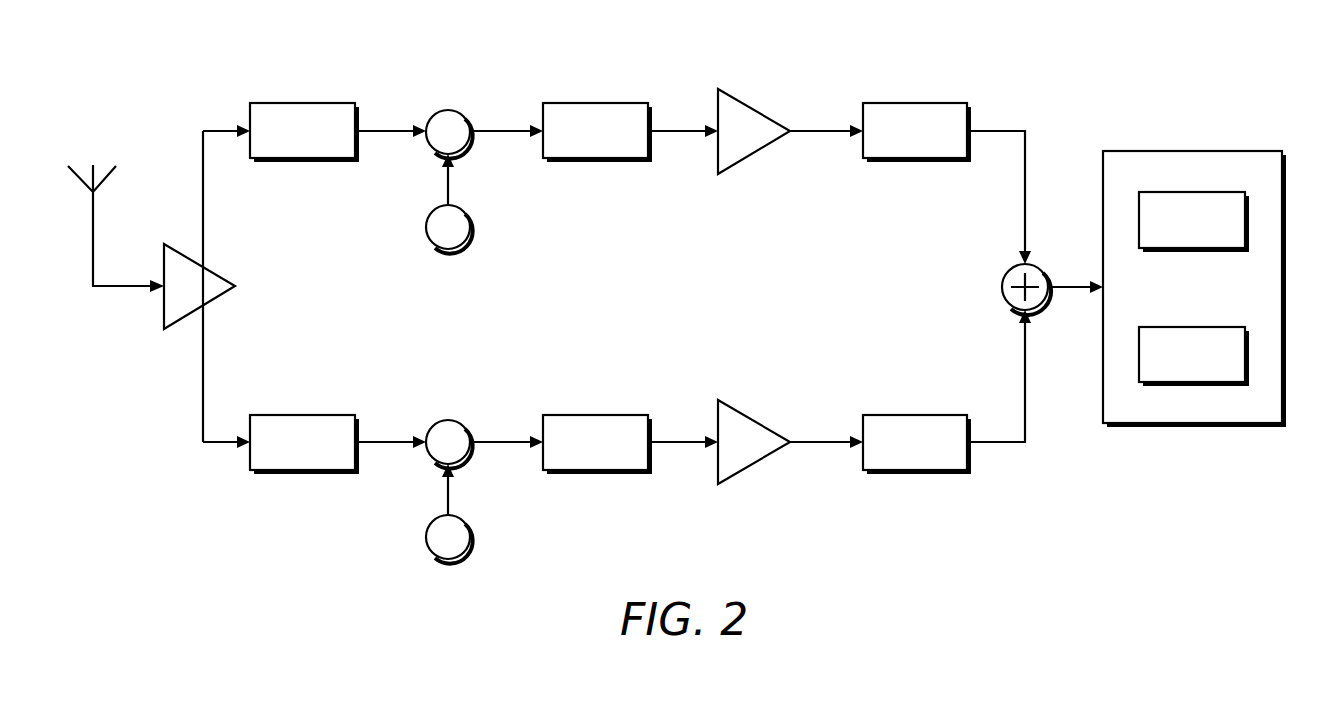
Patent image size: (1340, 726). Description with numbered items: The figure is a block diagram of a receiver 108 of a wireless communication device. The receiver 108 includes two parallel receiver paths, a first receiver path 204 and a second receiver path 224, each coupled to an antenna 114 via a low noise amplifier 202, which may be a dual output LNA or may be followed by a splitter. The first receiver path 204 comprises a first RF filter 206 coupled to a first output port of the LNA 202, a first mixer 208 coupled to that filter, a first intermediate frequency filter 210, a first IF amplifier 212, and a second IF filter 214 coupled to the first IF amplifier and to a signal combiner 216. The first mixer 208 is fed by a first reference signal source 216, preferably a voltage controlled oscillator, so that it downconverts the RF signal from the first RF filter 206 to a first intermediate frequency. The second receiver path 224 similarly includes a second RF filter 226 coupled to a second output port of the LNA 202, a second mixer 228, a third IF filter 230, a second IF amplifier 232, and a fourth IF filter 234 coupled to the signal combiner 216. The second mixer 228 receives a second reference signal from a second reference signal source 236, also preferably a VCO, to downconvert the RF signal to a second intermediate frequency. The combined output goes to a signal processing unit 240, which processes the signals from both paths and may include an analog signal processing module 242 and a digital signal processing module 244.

The receiver 108 is at (1081, 558).
The antenna 114 is at (93, 238).
The low noise amplifier 202 is at (222, 278).
The first receiver path 204 is at (806, 46).
The first RF filter 206 is at (342, 105).
The first mixer 208 is at (448, 110).
The first intermediate frequency filter 210 is at (636, 105).
The first IF amplifier 212 is at (757, 108).
The second IF filter 214 is at (956, 105).
The signal combiner / first reference signal source 216 is at (466, 212).
The second receiver path 224 is at (809, 524).
The second RF filter 226 is at (343, 416).
The second mixer 228 is at (448, 420).
The third IF filter 230 is at (638, 416).
The second IF amplifier 232 is at (757, 419).
The fourth IF filter 234 is at (956, 416).
The second reference signal source 236 is at (466, 523).
The signal processing unit 240 is at (1265, 151).
The analog signal processing module 242 is at (1220, 192).
The digital signal processing module 244 is at (1220, 326).